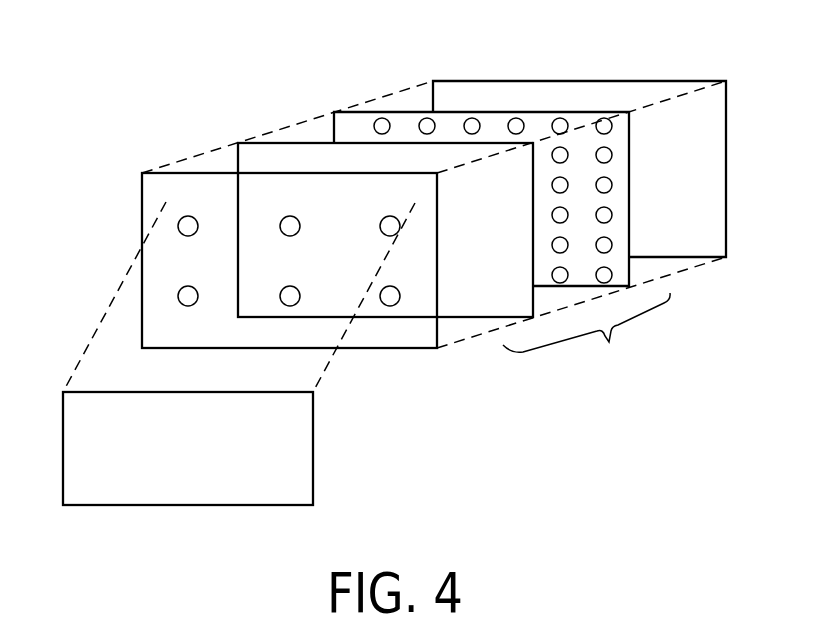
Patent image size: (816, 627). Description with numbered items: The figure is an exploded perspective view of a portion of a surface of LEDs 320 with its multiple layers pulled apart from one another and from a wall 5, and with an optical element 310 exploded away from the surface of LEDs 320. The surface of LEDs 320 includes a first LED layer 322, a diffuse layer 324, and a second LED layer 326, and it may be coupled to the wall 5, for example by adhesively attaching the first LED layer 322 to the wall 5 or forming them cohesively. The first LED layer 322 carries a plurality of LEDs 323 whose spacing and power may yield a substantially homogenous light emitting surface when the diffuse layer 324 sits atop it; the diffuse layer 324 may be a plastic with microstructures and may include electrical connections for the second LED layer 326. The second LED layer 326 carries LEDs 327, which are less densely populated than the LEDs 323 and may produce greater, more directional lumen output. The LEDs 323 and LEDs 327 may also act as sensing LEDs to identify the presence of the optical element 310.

The wall 5 is at (467, 80).
The optical element 310 is at (313, 448).
The surface of LEDs 320 is at (586, 334).
The first LED layer 322 is at (512, 164).
The LEDs 323 is at (568, 185).
The diffuse layer 324 is at (275, 143).
The second LED layer 326 is at (317, 225).
The LEDs 327 is at (400, 296).